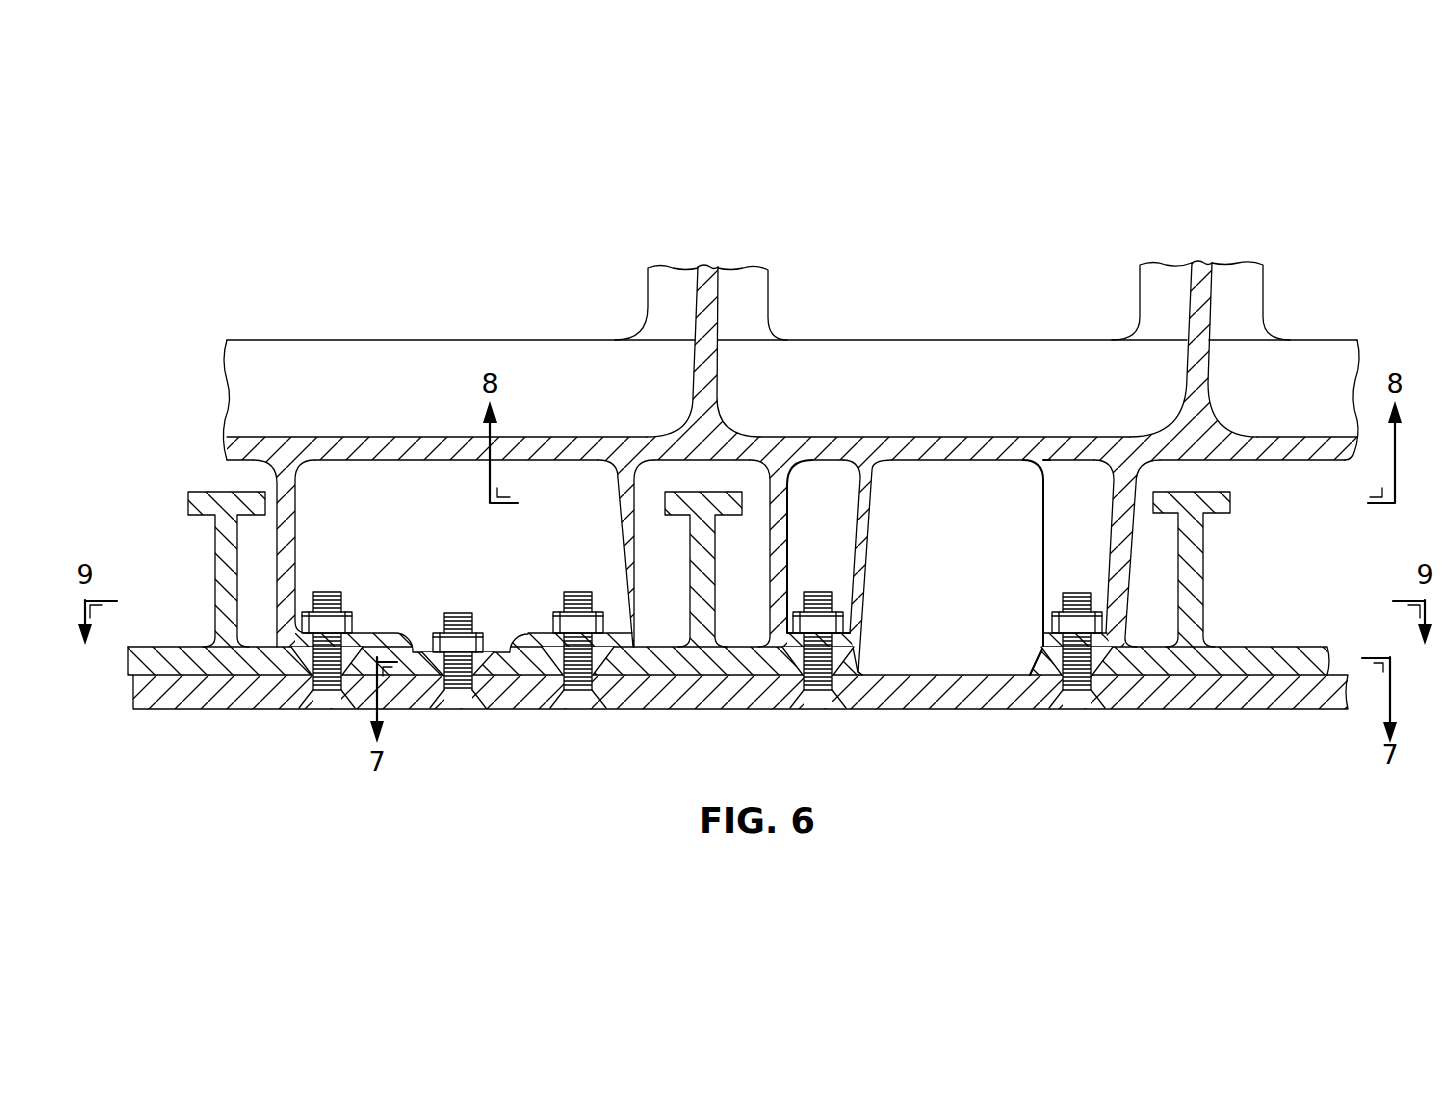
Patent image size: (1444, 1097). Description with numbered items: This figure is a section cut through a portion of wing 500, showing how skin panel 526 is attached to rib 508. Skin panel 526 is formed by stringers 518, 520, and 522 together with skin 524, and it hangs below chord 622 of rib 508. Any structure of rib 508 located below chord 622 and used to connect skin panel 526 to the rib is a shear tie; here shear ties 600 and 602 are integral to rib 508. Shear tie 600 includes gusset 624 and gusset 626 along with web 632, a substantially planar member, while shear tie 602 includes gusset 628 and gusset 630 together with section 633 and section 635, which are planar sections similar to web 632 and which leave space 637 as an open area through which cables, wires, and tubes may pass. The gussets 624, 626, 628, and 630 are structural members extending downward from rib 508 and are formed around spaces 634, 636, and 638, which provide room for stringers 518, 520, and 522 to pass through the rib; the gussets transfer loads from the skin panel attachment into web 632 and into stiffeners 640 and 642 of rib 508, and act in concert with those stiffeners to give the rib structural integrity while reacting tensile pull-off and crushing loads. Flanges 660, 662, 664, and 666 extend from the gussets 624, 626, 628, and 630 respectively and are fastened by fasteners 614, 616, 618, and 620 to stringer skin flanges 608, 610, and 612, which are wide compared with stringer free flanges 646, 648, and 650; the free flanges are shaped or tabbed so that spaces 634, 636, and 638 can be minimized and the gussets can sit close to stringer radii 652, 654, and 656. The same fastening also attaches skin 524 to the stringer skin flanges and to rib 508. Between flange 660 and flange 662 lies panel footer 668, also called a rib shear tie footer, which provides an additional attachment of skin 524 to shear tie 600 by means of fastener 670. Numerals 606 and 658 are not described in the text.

The wing 500 is at (485, 199).
The rib 508 is at (932, 403).
The stringer 518 is at (1217, 569).
The stringer 520 is at (678, 545).
The stringer 522 is at (203, 559).
The skin 524 is at (238, 712).
The skin panel 526 is at (315, 791).
The shear tie 600 is at (308, 516).
The shear tie 602 is at (871, 559).
The channel wall 606 is at (278, 533).
The stringer skin flange 608 is at (675, 668).
The stringer skin flange 610 is at (859, 663).
The stringer skin flange 612 is at (1305, 640).
The fastener 614 is at (325, 712).
The fastener 616 is at (578, 712).
The fastener 618 is at (820, 712).
The fastener 620 is at (1080, 712).
The chord 622 is at (1030, 437).
The gusset 624 is at (300, 505).
The gusset 626 is at (618, 540).
The gusset 628 is at (789, 520).
The gusset 630 is at (1108, 537).
The web 632 is at (438, 547).
The section 633 is at (858, 492).
The space 634 is at (196, 473).
The section 635 is at (1043, 562).
The space 636 is at (730, 468).
The space 637 is at (932, 547).
The space 638 is at (1235, 477).
The stiffener 640 is at (700, 285).
The stiffener 642 is at (1195, 285).
The stringer free flange 646 is at (187, 500).
The stringer free flange 648 is at (667, 472).
The stringer free flange 650 is at (1230, 504).
The stringer radius 652 is at (245, 628).
The stringer radius 654 is at (687, 643).
The stringer radius 656 is at (724, 642).
The fillet 658 is at (1170, 641).
The flange 660 is at (367, 627).
The flange 662 is at (527, 633).
The flange 664 is at (852, 637).
The flange 666 is at (1043, 638).
The panel footer 668 is at (415, 648).
The fastener 670 is at (450, 712).